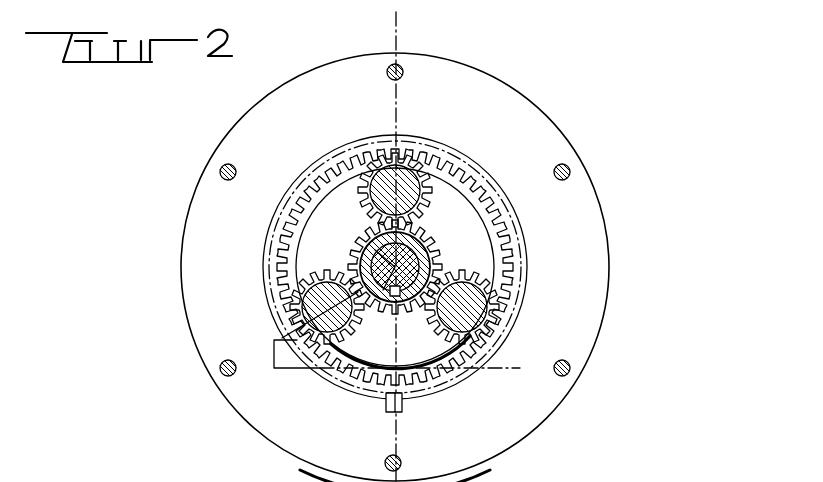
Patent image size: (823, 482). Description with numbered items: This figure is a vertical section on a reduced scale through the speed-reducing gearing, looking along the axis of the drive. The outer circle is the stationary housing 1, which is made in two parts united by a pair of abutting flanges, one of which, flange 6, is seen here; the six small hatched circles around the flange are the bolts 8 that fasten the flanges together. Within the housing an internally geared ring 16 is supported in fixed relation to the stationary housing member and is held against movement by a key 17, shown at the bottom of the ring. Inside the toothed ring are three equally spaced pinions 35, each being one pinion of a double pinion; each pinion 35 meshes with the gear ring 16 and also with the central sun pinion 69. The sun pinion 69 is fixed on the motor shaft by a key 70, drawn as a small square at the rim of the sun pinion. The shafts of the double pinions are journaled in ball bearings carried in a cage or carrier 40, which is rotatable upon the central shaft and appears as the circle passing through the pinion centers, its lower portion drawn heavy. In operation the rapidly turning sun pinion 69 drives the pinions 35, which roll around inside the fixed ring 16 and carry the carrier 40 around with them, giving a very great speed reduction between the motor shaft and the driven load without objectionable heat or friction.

The housing 1 is at (400, 27).
The flange 6 is at (480, 92).
The bolts 8 is at (403, 68).
The internally geared ring 16 is at (503, 246).
The key 17 is at (396, 400).
The pinion 35 is at (425, 203).
The cage or carrier 40 is at (455, 364).
The sun pinion 69 is at (362, 241).
The key 70 is at (395, 296).